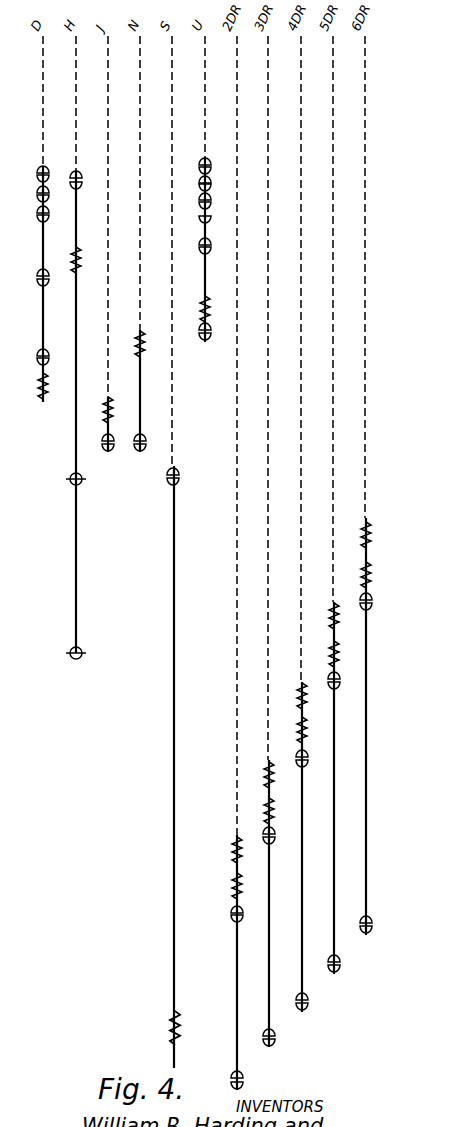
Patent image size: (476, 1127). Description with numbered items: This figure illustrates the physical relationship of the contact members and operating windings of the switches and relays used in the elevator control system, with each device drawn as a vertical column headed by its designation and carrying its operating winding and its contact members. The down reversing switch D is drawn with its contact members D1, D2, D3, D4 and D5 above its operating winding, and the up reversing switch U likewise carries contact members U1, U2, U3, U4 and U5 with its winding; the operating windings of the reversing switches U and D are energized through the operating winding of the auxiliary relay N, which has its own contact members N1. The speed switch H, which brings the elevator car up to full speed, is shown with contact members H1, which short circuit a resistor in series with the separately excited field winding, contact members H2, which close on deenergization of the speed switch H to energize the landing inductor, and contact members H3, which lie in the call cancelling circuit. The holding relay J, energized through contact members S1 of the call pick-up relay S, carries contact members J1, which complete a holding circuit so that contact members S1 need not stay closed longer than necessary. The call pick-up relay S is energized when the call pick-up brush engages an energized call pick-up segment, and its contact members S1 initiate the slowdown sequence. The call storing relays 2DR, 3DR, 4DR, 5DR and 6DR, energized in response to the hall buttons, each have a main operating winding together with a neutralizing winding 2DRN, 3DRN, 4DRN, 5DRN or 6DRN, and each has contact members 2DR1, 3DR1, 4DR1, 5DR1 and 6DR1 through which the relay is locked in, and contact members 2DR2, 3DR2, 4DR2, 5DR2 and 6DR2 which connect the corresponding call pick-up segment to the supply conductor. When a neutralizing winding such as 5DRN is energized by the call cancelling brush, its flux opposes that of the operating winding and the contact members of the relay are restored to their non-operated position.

The reversing switch D is at (38, 388).
The contact members of reversing switch D D1 is at (38, 166).
The contact members of reversing switch D D2 is at (38, 193).
The contact members of reversing switch D D3 is at (38, 213).
The contact members of reversing switch D D4 is at (40, 272).
The contact members of reversing switch D D5 is at (40, 351).
The speed switch H is at (80, 258).
The contact members of speed switch H H1 is at (72, 180).
The contact members of speed switch H H2 is at (70, 479).
The contact members of speed switch H H3 is at (70, 653).
The holding relay J is at (105, 408).
The contact members of holding relay J J1 is at (106, 451).
The auxiliary relay N is at (137, 340).
The contact members of auxiliary relay N N1 is at (138, 452).
The call pick-up relay S is at (170, 1020).
The contact members of call pick-up relay S S1 is at (166, 482).
The reversing switch U is at (200, 301).
The contact members of reversing switch U U1 is at (204, 160).
The contact members of reversing switch U U2 is at (204, 184).
The contact members of reversing switch U U3 is at (204, 207).
The contact members of reversing switch U U4 is at (204, 242).
The contact members of reversing switch U U5 is at (204, 340).
The call storing relay 2DR is at (232, 886).
The neutralizing winding of call storing relay 2DR 2DRN is at (232, 836).
The contact members of call storing relay 2DR 2DR1 is at (242, 917).
The contact members of call storing relay 2DR 2DR2 is at (244, 1085).
The call storing relay 3DR is at (267, 808).
The neutralizing winding of call storing relay 3DR 3DRN is at (268, 762).
The contact members of call storing relay 3DR 3DR1 is at (273, 842).
The contact members of call storing relay 3DR 3DR2 is at (276, 1048).
The call storing relay 4DR is at (300, 730).
The neutralizing winding of call storing relay 4DR 4DRN is at (300, 698).
The contact members of call storing relay 4DR 4DR1 is at (308, 764).
The contact members of call storing relay 4DR 4DR2 is at (306, 1011).
The call storing relay 5DR is at (333, 651).
The neutralizing winding of call storing relay 5DR 5DRN is at (332, 610).
The contact members of call storing relay 5DR 5DR1 is at (340, 688).
The contact members of call storing relay 5DR 5DR2 is at (336, 973).
The call storing relay 6DR is at (365, 576).
The neutralizing winding of call storing relay 6DR 6DRN is at (364, 532).
The contact members of call storing relay 6DR 6DR1 is at (370, 604).
The contact members of call storing relay 6DR 6DR2 is at (366, 935).